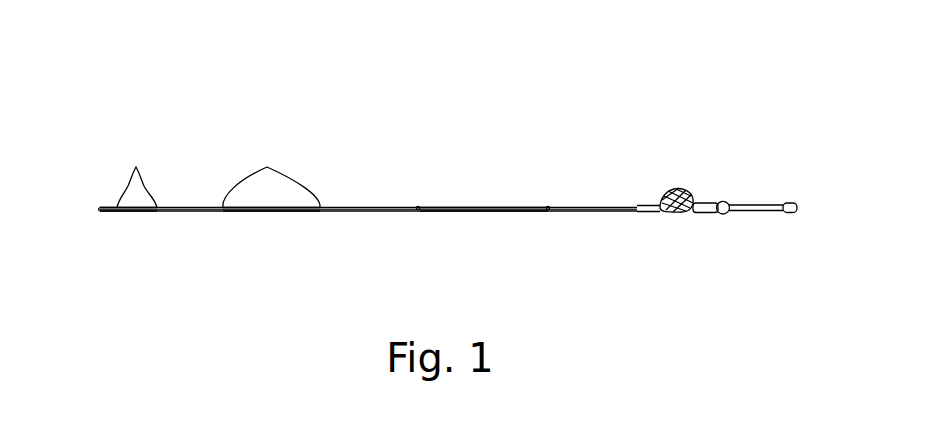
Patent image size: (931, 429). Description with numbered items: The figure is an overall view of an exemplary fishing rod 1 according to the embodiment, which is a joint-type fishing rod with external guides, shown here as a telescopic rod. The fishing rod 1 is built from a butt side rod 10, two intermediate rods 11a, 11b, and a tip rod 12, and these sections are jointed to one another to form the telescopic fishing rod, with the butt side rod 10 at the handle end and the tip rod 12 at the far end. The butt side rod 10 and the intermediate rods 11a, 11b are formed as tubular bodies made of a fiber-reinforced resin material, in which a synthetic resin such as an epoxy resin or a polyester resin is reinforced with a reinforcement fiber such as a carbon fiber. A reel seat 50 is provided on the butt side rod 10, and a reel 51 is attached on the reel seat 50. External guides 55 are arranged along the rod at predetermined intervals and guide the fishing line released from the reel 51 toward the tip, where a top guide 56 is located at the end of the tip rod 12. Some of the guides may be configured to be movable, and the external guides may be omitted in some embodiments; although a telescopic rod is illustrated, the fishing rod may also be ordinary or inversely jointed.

The fishing rod 1 is at (481, 116).
The butt side rod 10 is at (605, 213).
The intermediate rod 11a is at (473, 212).
The intermediate rod 11b is at (295, 212).
The tip rod 12 is at (142, 212).
The reel seat 50 is at (660, 212).
The reel 51 is at (663, 197).
The external guides 55 is at (570, 168).
The top guide 56 is at (100, 208).